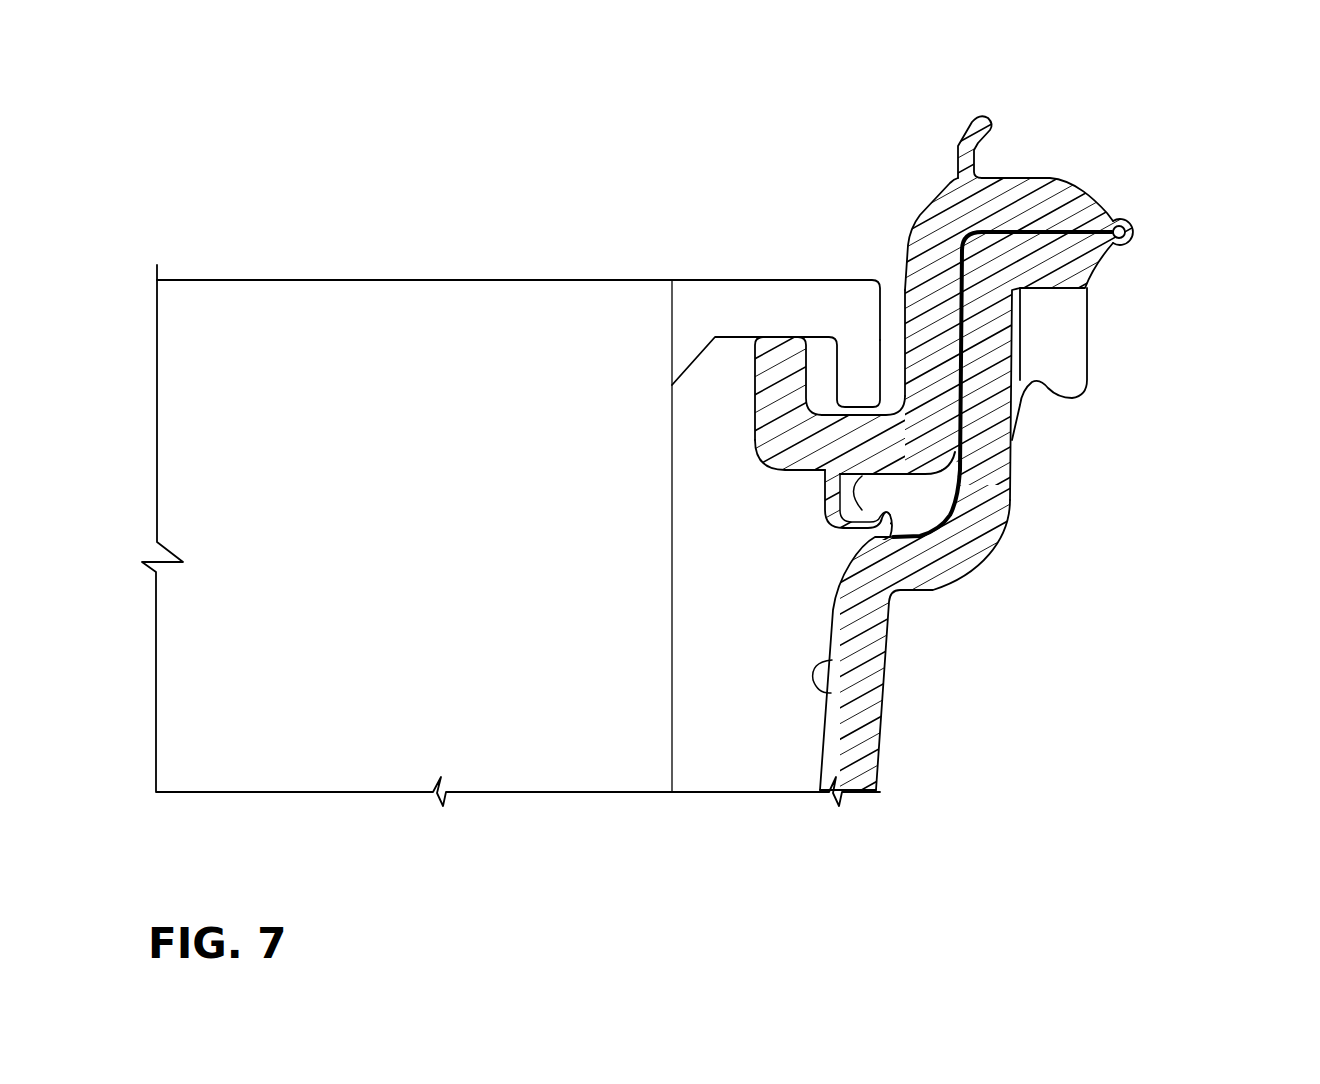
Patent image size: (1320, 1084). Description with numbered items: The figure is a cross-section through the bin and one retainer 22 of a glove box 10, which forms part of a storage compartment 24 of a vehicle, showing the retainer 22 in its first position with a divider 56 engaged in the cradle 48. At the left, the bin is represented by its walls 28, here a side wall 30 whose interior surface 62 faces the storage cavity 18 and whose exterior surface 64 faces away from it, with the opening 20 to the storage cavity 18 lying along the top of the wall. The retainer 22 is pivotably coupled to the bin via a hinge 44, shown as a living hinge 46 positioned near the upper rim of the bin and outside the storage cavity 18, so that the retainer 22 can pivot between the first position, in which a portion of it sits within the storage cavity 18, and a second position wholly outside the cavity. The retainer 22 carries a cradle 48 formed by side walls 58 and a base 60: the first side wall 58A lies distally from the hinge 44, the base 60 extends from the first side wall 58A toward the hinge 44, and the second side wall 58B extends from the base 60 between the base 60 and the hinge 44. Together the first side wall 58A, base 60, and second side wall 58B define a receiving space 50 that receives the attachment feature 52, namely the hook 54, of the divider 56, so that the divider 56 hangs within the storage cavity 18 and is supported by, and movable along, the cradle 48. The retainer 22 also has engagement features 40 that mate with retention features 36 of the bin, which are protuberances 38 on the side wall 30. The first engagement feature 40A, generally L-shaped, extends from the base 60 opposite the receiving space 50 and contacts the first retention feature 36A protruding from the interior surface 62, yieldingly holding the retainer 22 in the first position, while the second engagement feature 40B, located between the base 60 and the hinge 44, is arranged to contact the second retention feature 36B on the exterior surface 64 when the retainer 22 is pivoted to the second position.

The glove box 10 is at (868, 157).
The storage cavity 18 is at (733, 402).
The opening 20 is at (676, 257).
The retainer 22 is at (1078, 180).
The storage compartment 24 is at (846, 136).
The walls 28 is at (862, 737).
The side wall 30 is at (848, 767).
The retention feature 36 is at (1070, 539).
The first retention feature 36A is at (887, 510).
The second retention feature 36B is at (1058, 340).
The protuberance 38 is at (1053, 368).
The engagement feature 40 is at (901, 465).
The first engagement feature 40A is at (842, 521).
The second engagement feature 40B is at (973, 130).
The hinge 44 is at (1136, 217).
The living hinge 46 is at (1135, 240).
The cradle 48 is at (797, 474).
The receiving space 50 is at (893, 342).
The attachment feature 52 is at (822, 279).
The hook 54 is at (830, 308).
The divider 56 is at (375, 322).
The side walls 58 is at (933, 300).
The first side wall 58A is at (778, 367).
The second side wall 58B is at (935, 320).
The base 60 is at (850, 410).
The interior surface 62 is at (830, 690).
The exterior surface 64 is at (1012, 494).